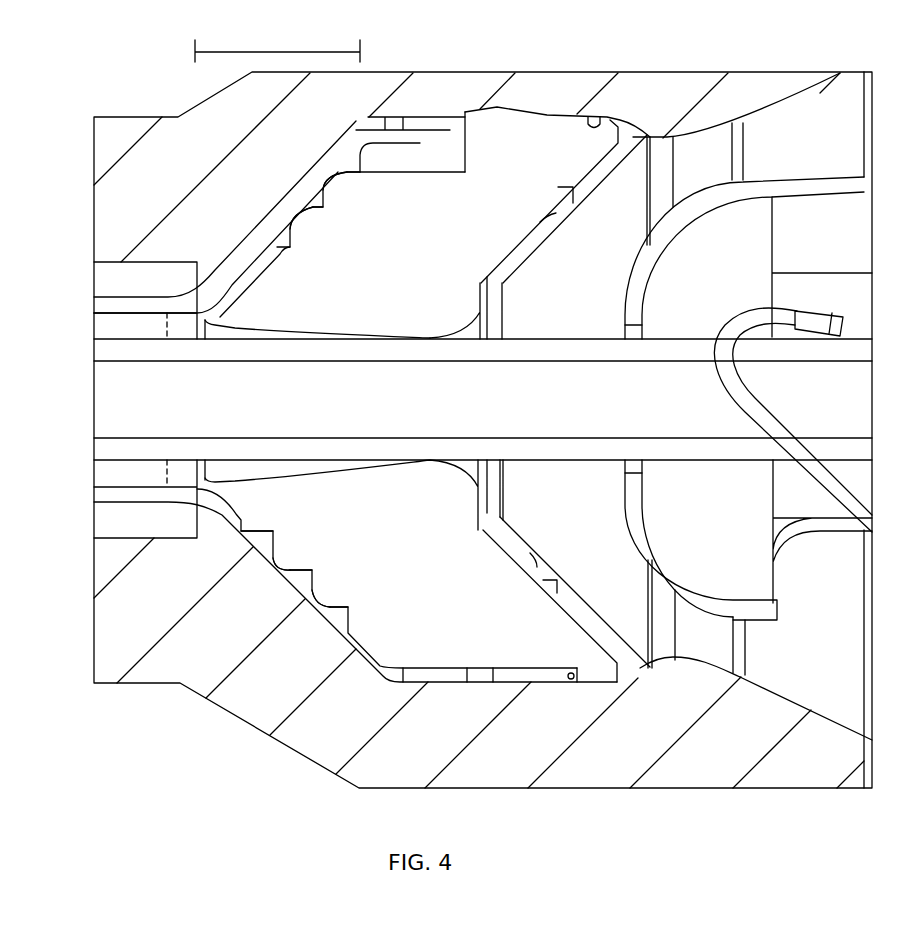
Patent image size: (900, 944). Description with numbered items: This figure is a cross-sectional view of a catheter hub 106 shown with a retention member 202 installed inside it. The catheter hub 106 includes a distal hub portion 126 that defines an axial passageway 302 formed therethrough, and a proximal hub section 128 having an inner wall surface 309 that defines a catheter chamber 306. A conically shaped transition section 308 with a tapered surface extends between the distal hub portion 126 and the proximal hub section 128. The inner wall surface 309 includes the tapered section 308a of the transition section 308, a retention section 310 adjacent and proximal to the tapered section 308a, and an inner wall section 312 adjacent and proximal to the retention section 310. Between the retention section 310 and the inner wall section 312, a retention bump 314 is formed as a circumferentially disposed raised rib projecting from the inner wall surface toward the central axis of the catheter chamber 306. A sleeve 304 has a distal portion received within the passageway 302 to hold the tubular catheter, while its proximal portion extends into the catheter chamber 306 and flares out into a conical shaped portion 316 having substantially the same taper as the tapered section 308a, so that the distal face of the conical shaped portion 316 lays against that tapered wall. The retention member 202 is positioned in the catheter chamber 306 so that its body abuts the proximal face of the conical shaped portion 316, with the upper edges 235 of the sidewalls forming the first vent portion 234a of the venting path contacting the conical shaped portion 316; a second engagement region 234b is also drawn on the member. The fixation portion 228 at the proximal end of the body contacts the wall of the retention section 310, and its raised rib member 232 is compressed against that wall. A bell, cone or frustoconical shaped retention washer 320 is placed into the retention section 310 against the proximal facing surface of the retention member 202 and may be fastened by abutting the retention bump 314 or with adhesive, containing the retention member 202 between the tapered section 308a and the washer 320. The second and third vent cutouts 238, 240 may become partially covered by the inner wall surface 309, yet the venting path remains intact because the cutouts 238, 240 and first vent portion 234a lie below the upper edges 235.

The catheter hub 106 is at (310, 744).
The distal hub portion 126 is at (133, 685).
The proximal hub section 128 is at (507, 770).
The retention member 202 is at (354, 545).
The fixation portion 228 is at (560, 114).
The raised rib member 232 is at (497, 106).
The first vent portion 234a is at (292, 247).
The second engagement plate 234b is at (520, 237).
The upper edges 235 is at (292, 225).
The second vent cutout 238 is at (448, 175).
The third vent cutout 240 is at (482, 676).
The axial passageway 302 is at (105, 468).
The sleeve 304 is at (105, 302).
The catheter chamber 306 is at (647, 135).
The transition section 308 is at (215, 54).
The tapered section 308a is at (284, 198).
The inner wall surface 309 is at (597, 116).
The retention section 310 is at (450, 128).
The inner wall section 312 is at (830, 715).
The retention bump 314 is at (642, 670).
The conical shaped portion 316 is at (257, 243).
The retention washer 320 is at (613, 275).